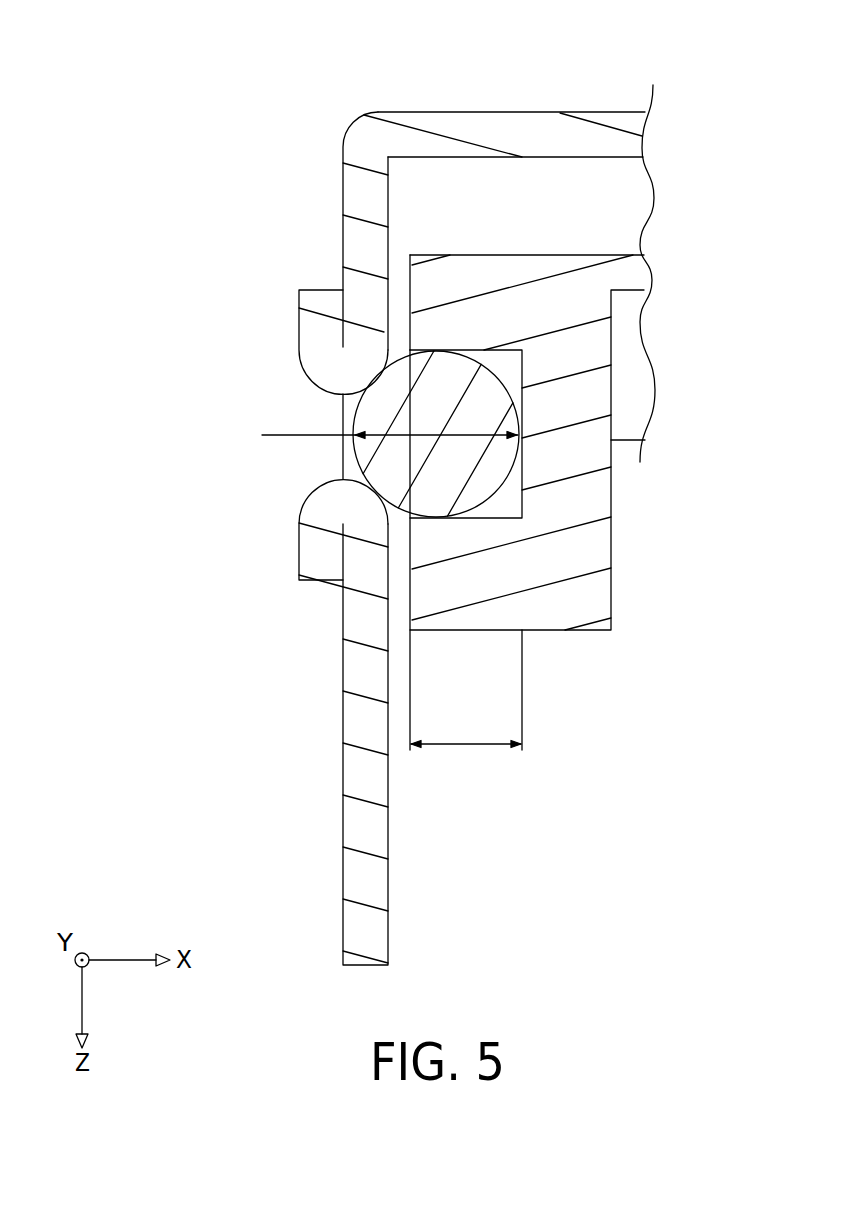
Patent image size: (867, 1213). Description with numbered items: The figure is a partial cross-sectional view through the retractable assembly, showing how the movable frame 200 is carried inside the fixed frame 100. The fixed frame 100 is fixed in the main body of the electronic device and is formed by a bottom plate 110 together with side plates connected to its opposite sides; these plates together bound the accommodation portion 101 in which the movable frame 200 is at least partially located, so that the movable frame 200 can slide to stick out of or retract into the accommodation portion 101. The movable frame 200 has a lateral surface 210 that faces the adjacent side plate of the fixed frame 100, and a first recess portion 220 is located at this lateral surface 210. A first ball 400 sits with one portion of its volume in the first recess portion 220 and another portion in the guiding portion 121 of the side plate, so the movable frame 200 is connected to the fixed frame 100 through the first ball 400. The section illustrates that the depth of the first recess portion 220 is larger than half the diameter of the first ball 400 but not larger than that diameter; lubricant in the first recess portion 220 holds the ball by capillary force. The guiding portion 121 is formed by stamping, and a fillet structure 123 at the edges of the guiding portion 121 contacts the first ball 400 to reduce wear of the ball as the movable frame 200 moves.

The fixed frame 100 is at (345, 126).
The bottom plate 110 is at (396, 138).
The guiding portion 121 is at (327, 471).
The fillet structure 123 is at (339, 392).
The movable frame 200 is at (565, 352).
The lateral surface 210 is at (408, 291).
The first recess portion 220 is at (497, 352).
The first ball 400 is at (413, 404).
The accommodation portion 101 is at (573, 208).